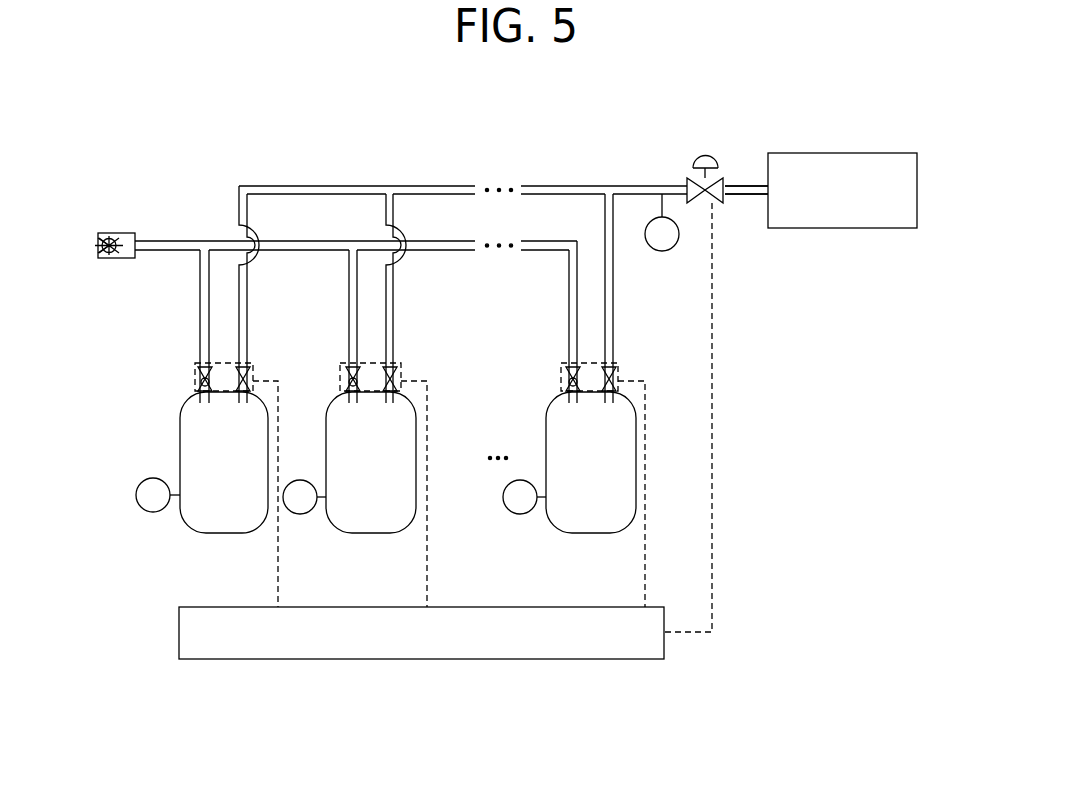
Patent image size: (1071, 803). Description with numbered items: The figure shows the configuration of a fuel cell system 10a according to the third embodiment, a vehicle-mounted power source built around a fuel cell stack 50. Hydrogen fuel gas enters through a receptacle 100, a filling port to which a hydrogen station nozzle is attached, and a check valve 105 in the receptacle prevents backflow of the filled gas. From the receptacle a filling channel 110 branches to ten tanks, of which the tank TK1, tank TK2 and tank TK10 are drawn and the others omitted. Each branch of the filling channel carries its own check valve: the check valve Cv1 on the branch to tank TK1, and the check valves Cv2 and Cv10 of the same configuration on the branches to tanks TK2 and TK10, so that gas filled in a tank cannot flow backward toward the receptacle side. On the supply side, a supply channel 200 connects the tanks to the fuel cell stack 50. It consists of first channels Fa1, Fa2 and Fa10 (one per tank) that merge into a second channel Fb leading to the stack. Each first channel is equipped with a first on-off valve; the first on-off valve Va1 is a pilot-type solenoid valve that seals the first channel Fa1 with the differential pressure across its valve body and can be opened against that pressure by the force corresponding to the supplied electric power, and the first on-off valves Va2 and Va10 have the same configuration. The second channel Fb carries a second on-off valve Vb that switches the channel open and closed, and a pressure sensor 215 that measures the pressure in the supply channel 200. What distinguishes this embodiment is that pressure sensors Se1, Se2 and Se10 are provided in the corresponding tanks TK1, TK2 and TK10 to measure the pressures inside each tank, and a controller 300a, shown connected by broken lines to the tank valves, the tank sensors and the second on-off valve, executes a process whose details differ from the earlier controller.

The fuel cell system 10a is at (772, 370).
The fuel cell stack 50 is at (840, 228).
The receptacle 100 is at (116, 233).
The check valve 105 is at (105, 259).
The filling channel 110 is at (189, 241).
The supply channel 200 is at (256, 140).
The pressure sensor 215 is at (650, 246).
The controller 300a is at (420, 659).
The first channel Fa1 is at (247, 217).
The first channel Fa2 is at (393, 217).
The first channel Fa10 is at (605, 217).
The second channel Fb is at (750, 186).
The second on-off valve Vb is at (722, 198).
The check valve Cv1 is at (200, 375).
The check valve Cv2 is at (348, 375).
The check valve Cv10 is at (568, 375).
The first on-off valve Va1 is at (246, 372).
The first on-off valve Va2 is at (394, 372).
The first on-off valve Va10 is at (614, 372).
The pressure sensor Se1 is at (154, 512).
The pressure sensor Se2 is at (300, 514).
The pressure sensor Se10 is at (520, 514).
The tank TK1 is at (223, 533).
The tank TK2 is at (371, 533).
The tank TK10 is at (591, 533).